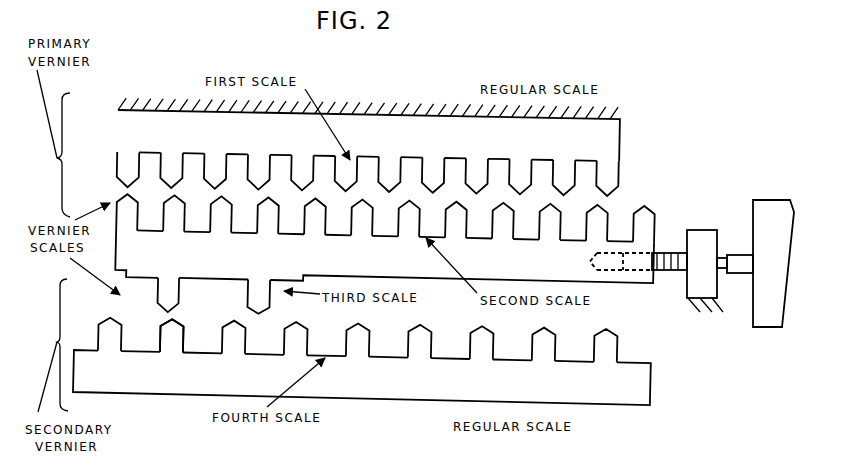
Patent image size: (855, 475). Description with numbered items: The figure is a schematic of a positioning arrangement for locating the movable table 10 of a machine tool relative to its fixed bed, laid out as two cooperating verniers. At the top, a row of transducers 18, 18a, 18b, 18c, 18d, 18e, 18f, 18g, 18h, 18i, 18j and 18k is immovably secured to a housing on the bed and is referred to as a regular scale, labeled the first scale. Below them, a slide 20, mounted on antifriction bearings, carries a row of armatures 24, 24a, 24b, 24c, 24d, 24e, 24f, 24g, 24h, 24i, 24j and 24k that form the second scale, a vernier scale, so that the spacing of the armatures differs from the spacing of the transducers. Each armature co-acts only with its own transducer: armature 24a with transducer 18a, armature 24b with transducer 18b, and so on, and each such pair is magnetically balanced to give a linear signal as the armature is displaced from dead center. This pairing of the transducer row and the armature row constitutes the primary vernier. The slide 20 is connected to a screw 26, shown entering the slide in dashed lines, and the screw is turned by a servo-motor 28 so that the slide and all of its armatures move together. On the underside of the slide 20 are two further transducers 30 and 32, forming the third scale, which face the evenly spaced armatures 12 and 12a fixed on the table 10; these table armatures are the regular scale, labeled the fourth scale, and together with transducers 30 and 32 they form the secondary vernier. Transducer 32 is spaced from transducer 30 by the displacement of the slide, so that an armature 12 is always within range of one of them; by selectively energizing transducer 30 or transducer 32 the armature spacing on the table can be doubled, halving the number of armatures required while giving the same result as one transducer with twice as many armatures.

The table 10 is at (137, 382).
The armatures 12 is at (97, 330).
The armature 12a is at (162, 332).
The transducer 18 is at (130, 170).
The transducer 18a is at (177, 172).
The transducer 18b is at (219, 172).
The transducer 18c is at (263, 172).
The transducer 18d is at (303, 176).
The transducer 18e is at (355, 170).
The transducer 18f is at (388, 178).
The transducer 18g is at (435, 178).
The transducer 18h is at (478, 180).
The transducer 18i is at (522, 178).
The transducer 18j is at (563, 183).
The transducer 18k is at (610, 183).
The slide 20 is at (602, 287).
The armature 24 is at (132, 207).
The armature 24a is at (178, 208).
The armature 24b is at (225, 210).
The armature 24c is at (273, 212).
The armature 24d is at (318, 212).
The armature 24e is at (365, 210).
The armature 24f is at (412, 213).
The armature 24g is at (457, 215).
The armature 24h is at (505, 213).
The armature 24i is at (552, 215).
The armature 24j is at (598, 215).
The armature 24k is at (643, 220).
The screw 26 is at (670, 253).
The servo-motor 28 is at (775, 212).
The transducer 30 is at (163, 297).
The transducer 32 is at (275, 290).